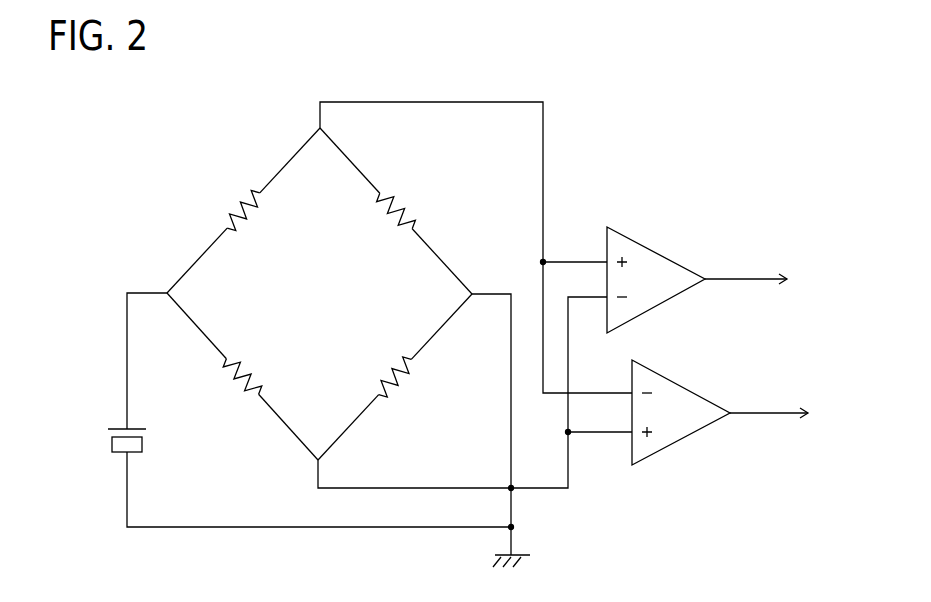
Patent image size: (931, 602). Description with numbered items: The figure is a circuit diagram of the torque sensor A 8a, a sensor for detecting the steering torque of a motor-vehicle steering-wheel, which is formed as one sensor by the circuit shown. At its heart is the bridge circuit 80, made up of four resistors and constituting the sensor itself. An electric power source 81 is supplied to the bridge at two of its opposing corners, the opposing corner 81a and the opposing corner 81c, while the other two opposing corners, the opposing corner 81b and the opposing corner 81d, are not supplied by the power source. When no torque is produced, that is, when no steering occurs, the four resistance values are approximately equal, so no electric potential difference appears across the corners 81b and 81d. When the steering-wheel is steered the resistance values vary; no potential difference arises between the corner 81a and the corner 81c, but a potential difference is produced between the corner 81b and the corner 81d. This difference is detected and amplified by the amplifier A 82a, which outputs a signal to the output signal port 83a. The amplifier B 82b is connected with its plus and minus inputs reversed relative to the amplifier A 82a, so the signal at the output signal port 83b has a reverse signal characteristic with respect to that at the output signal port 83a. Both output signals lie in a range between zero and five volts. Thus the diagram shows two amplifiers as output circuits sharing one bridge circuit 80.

The torque sensor A 8a is at (622, 108).
The bridge circuit 80 is at (228, 180).
The electric power source 81 is at (113, 473).
The opposing corner 81a is at (167, 292).
The opposing corner 81b is at (318, 128).
The opposing corner 81c is at (478, 285).
The opposing corner 81d is at (316, 465).
The amplifier A 82a is at (655, 232).
The amplifier B 82b is at (672, 455).
The output signal port 83a is at (712, 275).
The output signal port 83b is at (731, 408).